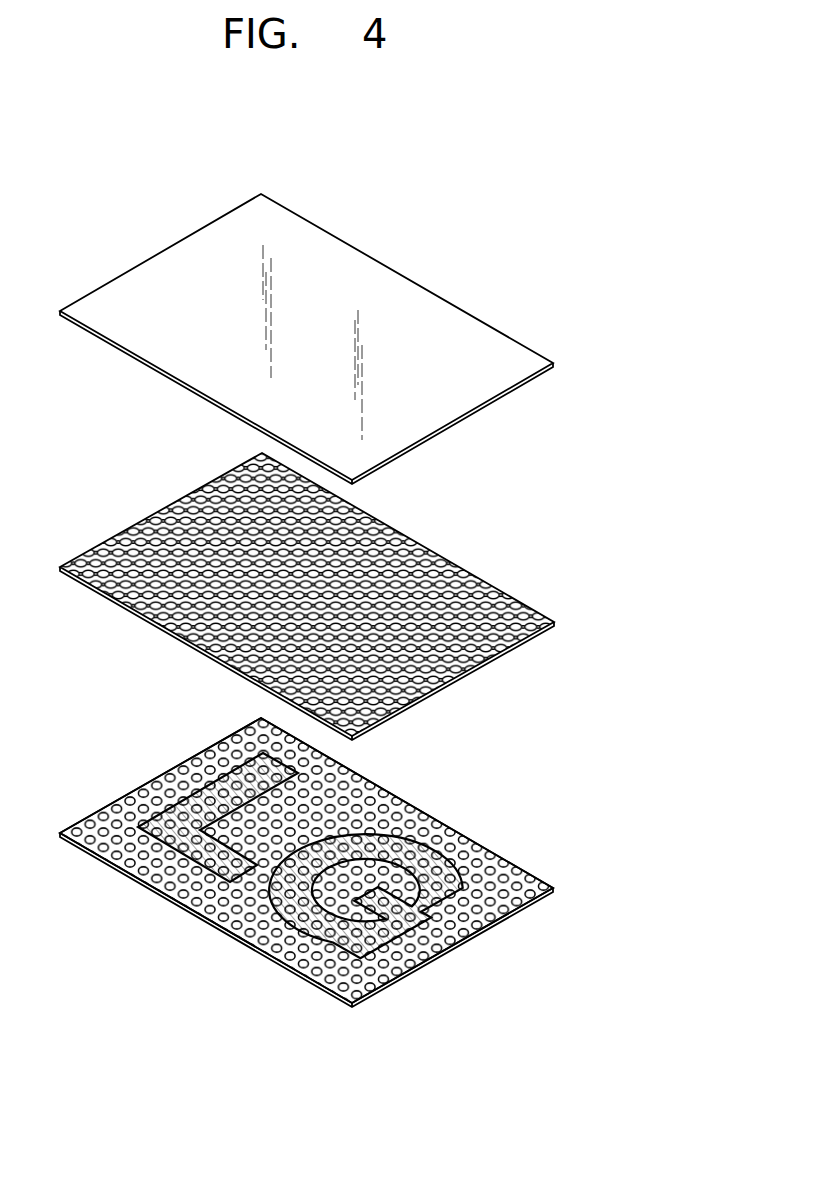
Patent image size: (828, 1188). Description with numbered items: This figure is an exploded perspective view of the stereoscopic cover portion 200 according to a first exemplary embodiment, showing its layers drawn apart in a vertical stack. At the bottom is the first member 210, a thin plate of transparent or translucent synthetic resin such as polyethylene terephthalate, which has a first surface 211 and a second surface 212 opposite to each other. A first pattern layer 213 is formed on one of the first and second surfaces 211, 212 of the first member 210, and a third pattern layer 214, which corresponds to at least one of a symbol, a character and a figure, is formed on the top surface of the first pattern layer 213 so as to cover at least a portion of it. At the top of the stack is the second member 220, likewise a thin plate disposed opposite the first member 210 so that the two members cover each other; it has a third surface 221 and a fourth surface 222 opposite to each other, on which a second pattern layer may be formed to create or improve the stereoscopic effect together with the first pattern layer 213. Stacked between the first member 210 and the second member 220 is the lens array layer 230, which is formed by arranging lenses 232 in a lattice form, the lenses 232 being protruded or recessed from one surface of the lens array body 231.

The stereoscopic cover portion 200 is at (600, 512).
The first member 210 is at (353, 862).
The first surface 211 is at (523, 910).
The second surface 212 is at (548, 882).
The first pattern layer 213 is at (517, 867).
The third pattern layer 214 is at (437, 852).
The second member 220 is at (362, 339).
The third surface 221 is at (518, 390).
The fourth surface 222 is at (510, 348).
The lens array layer 230 is at (381, 596).
The lens array body 231 is at (645, 577).
The lenses 232 is at (548, 612).